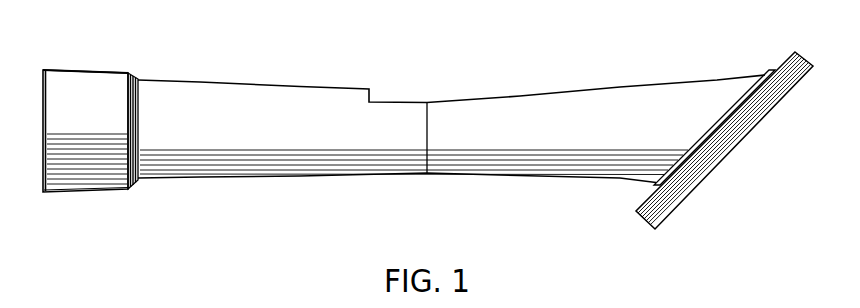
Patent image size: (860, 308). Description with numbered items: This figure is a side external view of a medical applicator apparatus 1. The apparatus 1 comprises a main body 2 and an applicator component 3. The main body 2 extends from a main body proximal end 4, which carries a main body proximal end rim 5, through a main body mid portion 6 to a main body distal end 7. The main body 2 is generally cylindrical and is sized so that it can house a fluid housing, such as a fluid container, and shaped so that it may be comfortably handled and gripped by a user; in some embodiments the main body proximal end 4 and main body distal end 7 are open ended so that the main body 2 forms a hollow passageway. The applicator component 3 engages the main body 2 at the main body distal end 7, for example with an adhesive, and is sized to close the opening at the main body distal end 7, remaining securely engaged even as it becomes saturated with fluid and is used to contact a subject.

The apparatus 1 is at (427, 122).
The main body 2 is at (451, 129).
The applicator component 3 is at (732, 130).
The main body proximal end 4 is at (90, 149).
The main body proximal end rim 5 is at (77, 59).
The main body mid portion 6 is at (434, 158).
The main body distal end 7 is at (714, 116).